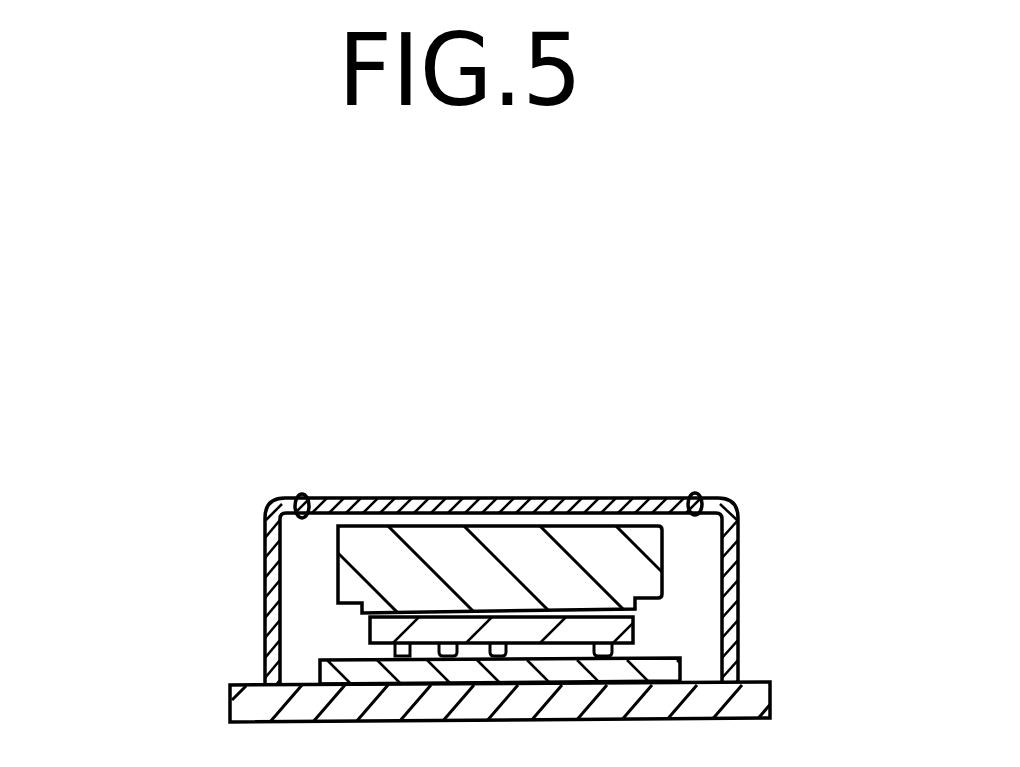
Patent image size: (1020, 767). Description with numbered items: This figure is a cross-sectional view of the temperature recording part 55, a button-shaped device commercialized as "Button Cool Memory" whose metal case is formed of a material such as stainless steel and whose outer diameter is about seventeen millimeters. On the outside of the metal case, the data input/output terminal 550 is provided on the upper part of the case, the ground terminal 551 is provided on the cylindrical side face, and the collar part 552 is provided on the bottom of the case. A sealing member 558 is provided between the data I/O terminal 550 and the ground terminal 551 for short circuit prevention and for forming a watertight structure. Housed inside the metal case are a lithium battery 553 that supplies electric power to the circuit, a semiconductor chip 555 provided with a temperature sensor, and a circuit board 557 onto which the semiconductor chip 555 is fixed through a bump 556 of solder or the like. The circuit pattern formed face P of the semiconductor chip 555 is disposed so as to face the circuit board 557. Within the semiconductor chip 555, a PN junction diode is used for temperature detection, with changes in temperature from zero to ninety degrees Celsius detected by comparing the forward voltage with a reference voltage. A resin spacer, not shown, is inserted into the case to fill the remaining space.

The temperature recording part 55 is at (727, 500).
The data input/output terminal 550 is at (595, 495).
The ground terminal 551 is at (337, 573).
The collar part 552 is at (232, 712).
The lithium battery 553 is at (267, 540).
The semiconductor chip 555 is at (636, 630).
The bump 556 is at (398, 652).
The circuit board 557 is at (680, 667).
The sealing member 558 is at (298, 495).
The circuit pattern formed face P is at (451, 643).